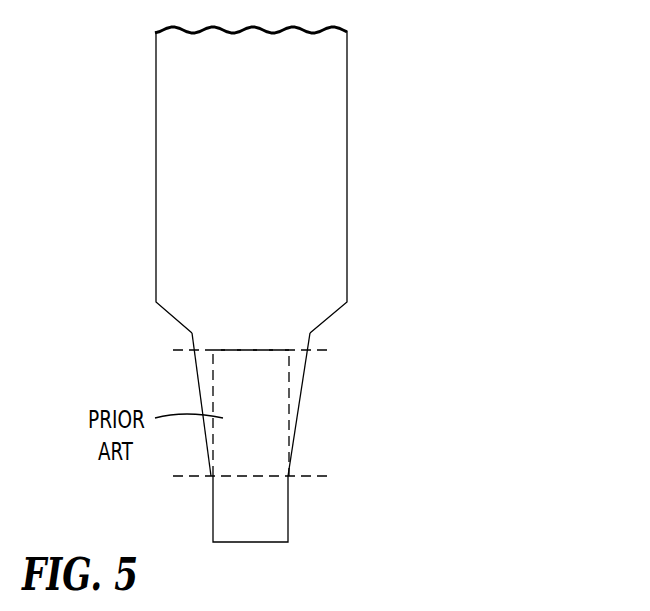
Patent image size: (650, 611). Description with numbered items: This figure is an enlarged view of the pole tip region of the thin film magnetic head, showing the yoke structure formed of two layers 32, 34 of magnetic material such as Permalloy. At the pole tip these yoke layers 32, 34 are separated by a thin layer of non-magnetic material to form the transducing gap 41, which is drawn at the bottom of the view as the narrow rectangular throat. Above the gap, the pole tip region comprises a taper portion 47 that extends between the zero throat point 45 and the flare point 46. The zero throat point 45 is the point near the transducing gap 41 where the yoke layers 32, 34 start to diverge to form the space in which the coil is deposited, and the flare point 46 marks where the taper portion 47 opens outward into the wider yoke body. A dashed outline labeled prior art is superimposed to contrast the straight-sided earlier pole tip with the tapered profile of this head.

The yoke layer p1 32 is at (290, 180).
The yoke layer p2 34 is at (340, 185).
The transducing gap 41 is at (255, 542).
The zero throat point 45 is at (390, 479).
The flare point 46 is at (342, 351).
The taper portion 47 is at (297, 414).